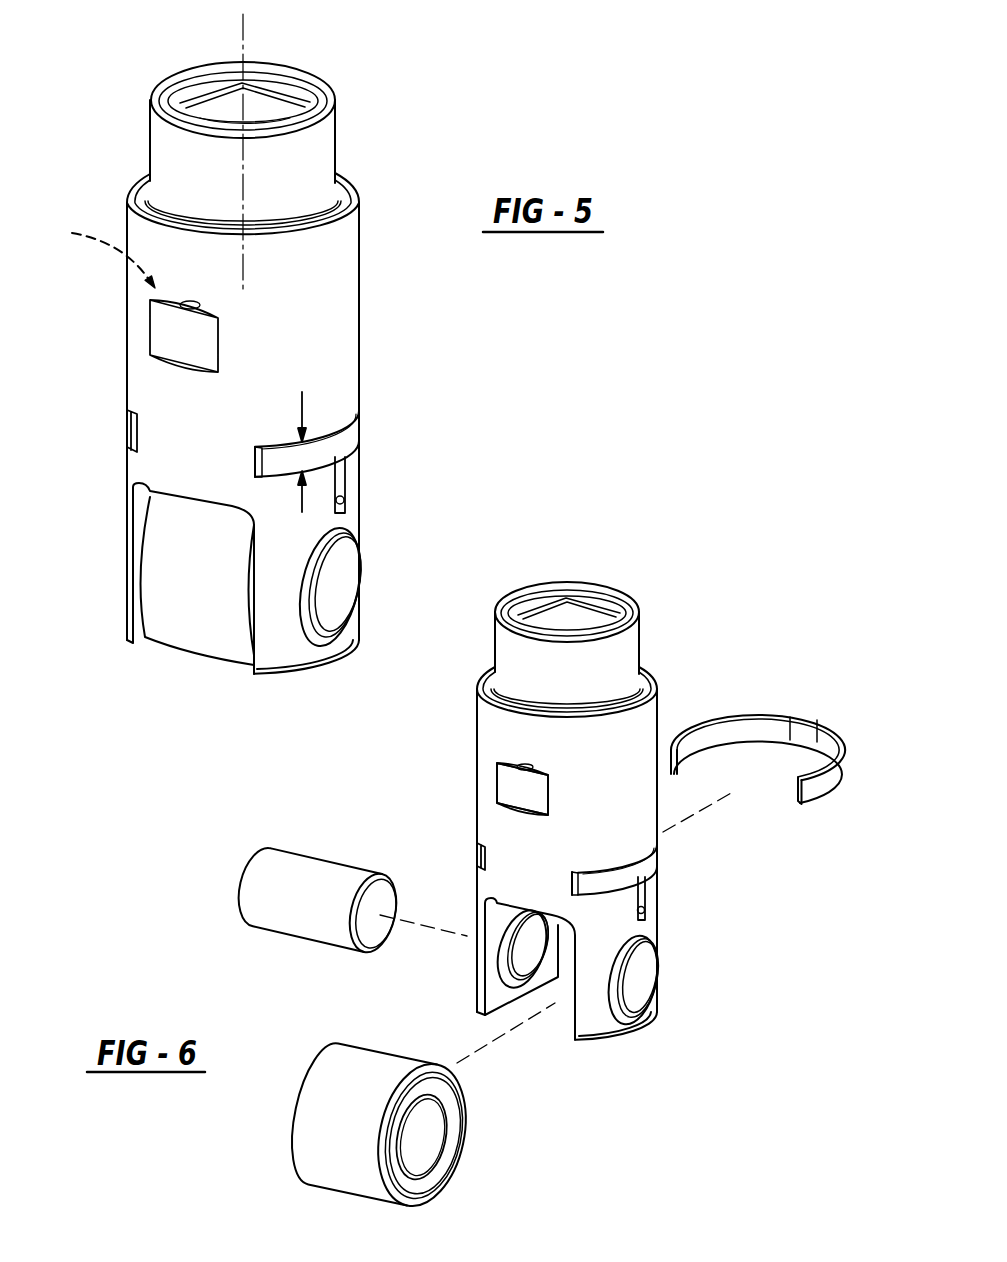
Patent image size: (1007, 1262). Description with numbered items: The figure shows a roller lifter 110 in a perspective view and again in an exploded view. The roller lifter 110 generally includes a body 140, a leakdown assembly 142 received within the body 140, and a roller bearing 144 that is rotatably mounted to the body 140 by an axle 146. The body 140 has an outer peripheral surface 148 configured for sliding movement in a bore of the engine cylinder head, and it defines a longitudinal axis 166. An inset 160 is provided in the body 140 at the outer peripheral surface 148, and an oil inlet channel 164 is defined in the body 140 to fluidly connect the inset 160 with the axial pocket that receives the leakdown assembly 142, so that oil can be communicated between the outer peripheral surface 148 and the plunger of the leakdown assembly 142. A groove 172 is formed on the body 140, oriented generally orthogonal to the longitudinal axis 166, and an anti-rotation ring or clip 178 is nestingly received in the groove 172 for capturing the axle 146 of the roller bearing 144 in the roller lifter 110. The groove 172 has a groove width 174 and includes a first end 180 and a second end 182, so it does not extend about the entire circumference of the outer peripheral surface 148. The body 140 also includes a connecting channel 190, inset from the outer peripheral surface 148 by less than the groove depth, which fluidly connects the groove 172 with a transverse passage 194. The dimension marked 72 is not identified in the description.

In FIG. 5, the width of retaining ring 72 is at (273, 456).
In FIG. 5, the roller lifter 110 is at (415, 142).
In FIG. 5, the body 140 is at (256, 388).
In FIG. 6, the body 140 is at (593, 811).
In FIG. 5, the leakdown assembly 142 is at (97, 249).
In FIG. 5, the roller bearing 144 is at (195, 582).
In FIG. 6, the roller bearing 144 is at (327, 1133).
In FIG. 5, the axle 146 is at (328, 578).
In FIG. 6, the axle 146 is at (309, 882).
In FIG. 5, the outer peripheral surface 148 is at (362, 336).
In FIG. 6, the inset 160 is at (508, 783).
In FIG. 5, the oil inlet channel 164 is at (185, 303).
In FIG. 6, the oil inlet channel 164 is at (505, 763).
In FIG. 5, the longitudinal axis 166 is at (243, 33).
In FIG. 6, the groove 172 is at (605, 878).
In FIG. 5, the groove width 174 is at (300, 482).
In FIG. 5, the anti-rotation ring or clip 178 is at (348, 437).
In FIG. 6, the anti-rotation ring or clip 178 is at (818, 783).
In FIG. 5, the first end 180 is at (137, 438).
In FIG. 6, the first end 180 is at (483, 858).
In FIG. 5, the second end 182 is at (254, 462).
In FIG. 6, the second end 182 is at (572, 883).
In FIG. 5, the connecting channel 190 is at (346, 470).
In FIG. 6, the connecting channel 190 is at (648, 882).
In FIG. 5, the transverse passage 194 is at (346, 498).
In FIG. 6, the transverse passage 194 is at (648, 912).